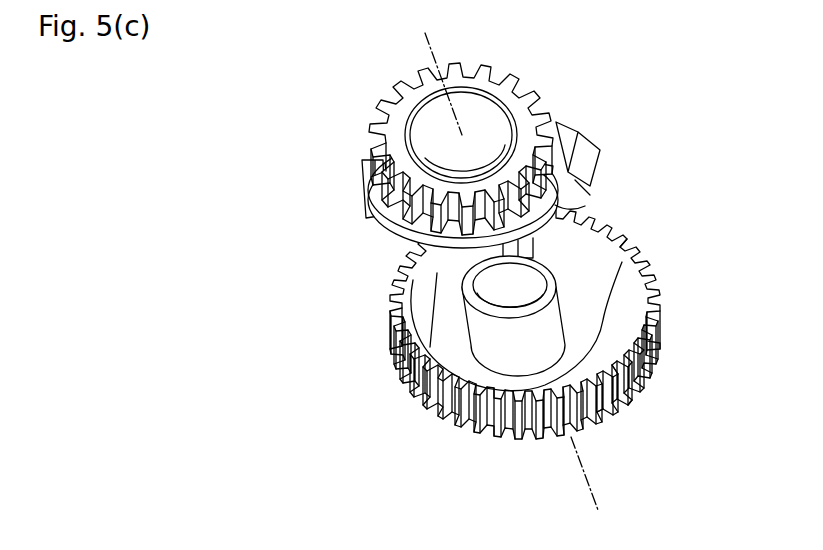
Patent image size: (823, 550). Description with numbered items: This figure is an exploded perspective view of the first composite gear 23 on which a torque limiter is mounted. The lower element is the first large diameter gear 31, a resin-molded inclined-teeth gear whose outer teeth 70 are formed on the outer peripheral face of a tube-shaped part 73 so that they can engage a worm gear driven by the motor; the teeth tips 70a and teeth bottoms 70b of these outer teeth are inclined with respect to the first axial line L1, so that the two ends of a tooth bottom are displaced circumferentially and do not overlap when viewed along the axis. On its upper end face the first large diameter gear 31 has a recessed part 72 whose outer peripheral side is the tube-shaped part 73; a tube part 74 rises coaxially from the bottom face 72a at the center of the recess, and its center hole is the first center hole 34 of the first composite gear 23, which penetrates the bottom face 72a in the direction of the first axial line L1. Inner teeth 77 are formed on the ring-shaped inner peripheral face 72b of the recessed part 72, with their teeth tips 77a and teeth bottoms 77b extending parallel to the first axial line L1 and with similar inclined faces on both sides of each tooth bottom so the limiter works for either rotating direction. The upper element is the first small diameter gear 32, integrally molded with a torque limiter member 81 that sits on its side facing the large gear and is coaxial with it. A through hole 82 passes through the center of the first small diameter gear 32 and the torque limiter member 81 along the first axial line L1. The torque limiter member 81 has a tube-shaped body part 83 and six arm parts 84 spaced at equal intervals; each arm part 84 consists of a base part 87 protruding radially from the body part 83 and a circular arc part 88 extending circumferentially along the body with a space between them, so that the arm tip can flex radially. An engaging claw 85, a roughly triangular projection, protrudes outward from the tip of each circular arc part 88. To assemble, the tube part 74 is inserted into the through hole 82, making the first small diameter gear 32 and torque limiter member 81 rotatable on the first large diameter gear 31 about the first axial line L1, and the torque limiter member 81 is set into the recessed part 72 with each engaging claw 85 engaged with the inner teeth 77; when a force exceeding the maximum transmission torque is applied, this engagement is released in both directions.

The first composite gear 23 is at (712, 90).
The first axial line L1 is at (432, 40).
The first large diameter gear 31 is at (405, 418).
The first small diameter gear 32 is at (369, 109).
The first center hole 34 is at (602, 249).
The outer teeth 70 is at (657, 381).
The teeth tips 70a is at (627, 395).
The teeth bottoms 70b is at (607, 412).
The recessed part 72 is at (675, 250).
The bottom face 72a is at (468, 353).
The ring-shaped inner peripheral face 72b is at (458, 284).
The tube-shaped part 73 is at (420, 373).
The tube part 74 is at (493, 337).
The inner teeth 77 is at (592, 342).
The teeth tips 77a is at (600, 325).
The teeth bottoms 77b is at (600, 340).
The torque limiter member 81 is at (345, 171).
The through hole 82 is at (507, 120).
The body part 83 is at (555, 146).
The arm parts 84 is at (686, 143).
The engaging claw 85 is at (560, 233).
The base part 87 is at (577, 183).
The circular arc part 88 is at (560, 207).